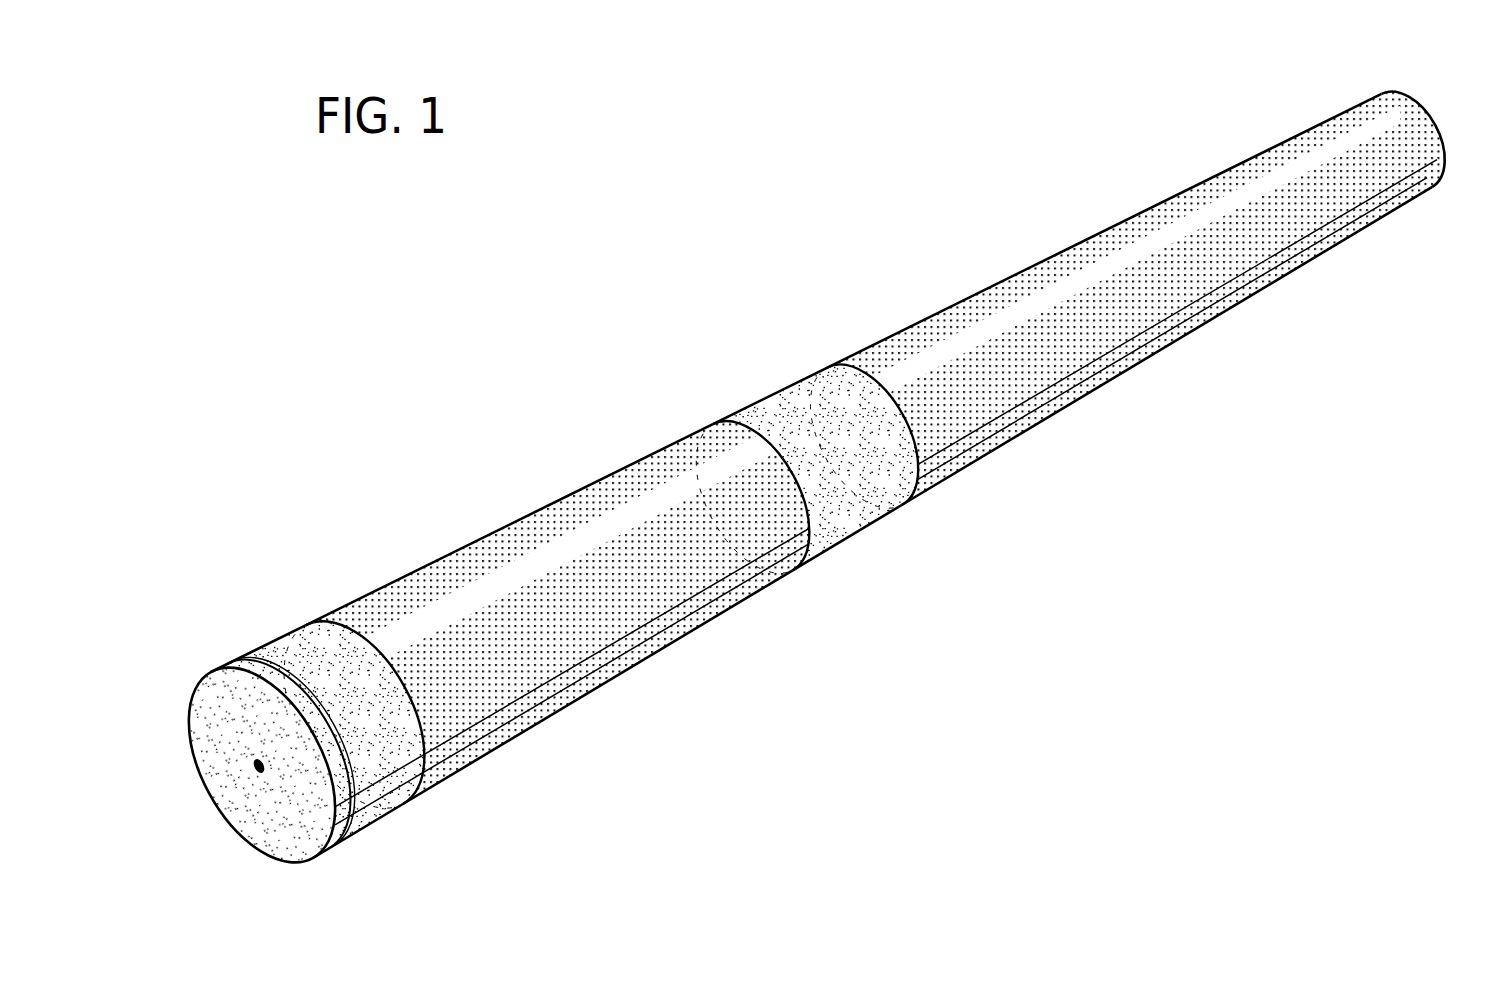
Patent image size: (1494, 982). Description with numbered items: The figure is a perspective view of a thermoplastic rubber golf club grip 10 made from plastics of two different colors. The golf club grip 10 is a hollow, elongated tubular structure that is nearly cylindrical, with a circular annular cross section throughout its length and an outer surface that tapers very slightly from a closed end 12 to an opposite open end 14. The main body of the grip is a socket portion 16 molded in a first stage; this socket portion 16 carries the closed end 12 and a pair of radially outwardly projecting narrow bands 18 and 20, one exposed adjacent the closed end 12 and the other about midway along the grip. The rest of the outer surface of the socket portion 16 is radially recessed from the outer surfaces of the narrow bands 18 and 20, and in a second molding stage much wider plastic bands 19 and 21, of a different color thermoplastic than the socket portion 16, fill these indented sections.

The golf club grip 10 is at (689, 272).
The closed end 12 is at (241, 816).
The open end 14 is at (1433, 121).
The socket portion 16 is at (247, 621).
The narrow band 18 is at (375, 776).
The wide plastic band 19 is at (584, 515).
The narrow band 20 is at (768, 420).
The wide plastic band 21 is at (1088, 250).